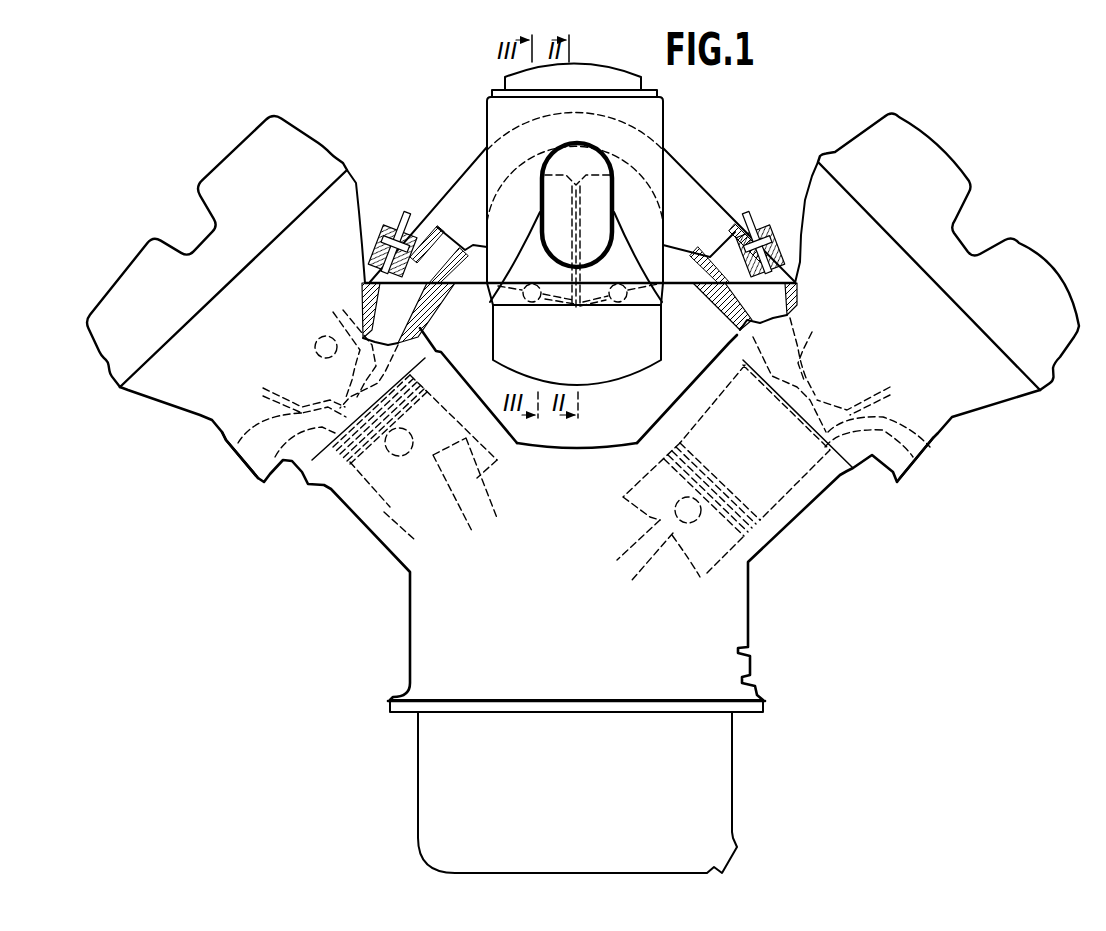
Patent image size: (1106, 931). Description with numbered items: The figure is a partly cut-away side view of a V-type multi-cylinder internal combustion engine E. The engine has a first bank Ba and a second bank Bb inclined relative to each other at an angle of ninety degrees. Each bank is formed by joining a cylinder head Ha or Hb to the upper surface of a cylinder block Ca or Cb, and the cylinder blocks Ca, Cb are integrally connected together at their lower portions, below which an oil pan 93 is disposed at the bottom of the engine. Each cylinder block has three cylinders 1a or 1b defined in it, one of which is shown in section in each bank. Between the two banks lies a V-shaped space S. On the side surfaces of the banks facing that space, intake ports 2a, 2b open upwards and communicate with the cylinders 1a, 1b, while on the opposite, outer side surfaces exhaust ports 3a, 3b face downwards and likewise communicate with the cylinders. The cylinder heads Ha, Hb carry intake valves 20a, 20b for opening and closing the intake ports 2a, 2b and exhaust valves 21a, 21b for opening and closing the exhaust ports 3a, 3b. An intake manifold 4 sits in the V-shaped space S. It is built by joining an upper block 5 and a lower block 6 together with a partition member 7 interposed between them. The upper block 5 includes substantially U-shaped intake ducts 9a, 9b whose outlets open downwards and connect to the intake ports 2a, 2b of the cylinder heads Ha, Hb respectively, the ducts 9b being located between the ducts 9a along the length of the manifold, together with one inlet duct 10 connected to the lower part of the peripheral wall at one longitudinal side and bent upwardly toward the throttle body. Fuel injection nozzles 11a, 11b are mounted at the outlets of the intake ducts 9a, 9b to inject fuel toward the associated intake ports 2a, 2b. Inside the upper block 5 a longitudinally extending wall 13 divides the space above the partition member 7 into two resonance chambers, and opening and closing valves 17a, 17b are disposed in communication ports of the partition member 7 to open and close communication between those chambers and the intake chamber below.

The cylinder 1a is at (342, 490).
The cylinder 1b is at (793, 479).
The intake port 2a is at (410, 308).
The intake port 2b is at (740, 314).
The exhaust port 3a is at (244, 448).
The exhaust port 3b is at (906, 459).
The intake manifold 4 is at (687, 158).
The upper block 5 is at (661, 214).
The lower block 6 is at (661, 331).
The partition member 7 is at (659, 290).
The intake duct 9a is at (463, 195).
The intake duct 9b is at (713, 213).
The inlet duct 10 is at (607, 168).
The fuel injection nozzle 11a is at (402, 214).
The fuel injection nozzle 11b is at (753, 222).
The wall 13 is at (573, 208).
The opening and closing valve 17a is at (601, 300).
The opening and closing valve 17b is at (553, 297).
The intake valve 20a is at (350, 359).
The intake valve 20b is at (817, 343).
The exhaust valve 21a is at (293, 393).
The exhaust valve 21b is at (868, 397).
The oil pan 93 is at (727, 778).
The first bank Ba is at (329, 145).
The second bank Bb is at (970, 236).
The cylinder block Ca is at (462, 393).
The cylinder block Cb is at (684, 396).
The internal combustion engine E is at (974, 166).
The cylinder head Ha is at (186, 407).
The cylinder head Hb is at (951, 412).
The V-shaped space S is at (626, 411).